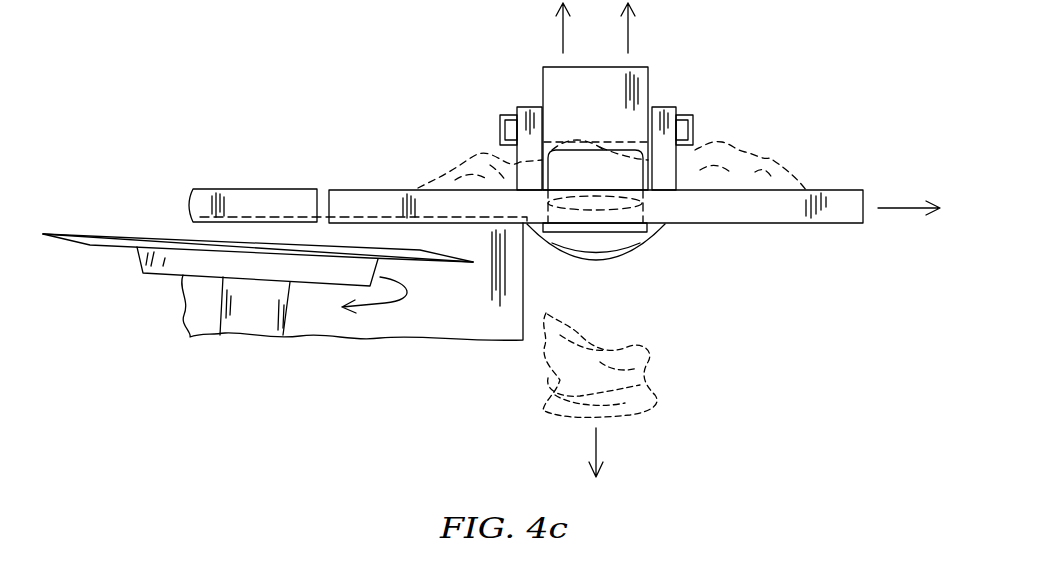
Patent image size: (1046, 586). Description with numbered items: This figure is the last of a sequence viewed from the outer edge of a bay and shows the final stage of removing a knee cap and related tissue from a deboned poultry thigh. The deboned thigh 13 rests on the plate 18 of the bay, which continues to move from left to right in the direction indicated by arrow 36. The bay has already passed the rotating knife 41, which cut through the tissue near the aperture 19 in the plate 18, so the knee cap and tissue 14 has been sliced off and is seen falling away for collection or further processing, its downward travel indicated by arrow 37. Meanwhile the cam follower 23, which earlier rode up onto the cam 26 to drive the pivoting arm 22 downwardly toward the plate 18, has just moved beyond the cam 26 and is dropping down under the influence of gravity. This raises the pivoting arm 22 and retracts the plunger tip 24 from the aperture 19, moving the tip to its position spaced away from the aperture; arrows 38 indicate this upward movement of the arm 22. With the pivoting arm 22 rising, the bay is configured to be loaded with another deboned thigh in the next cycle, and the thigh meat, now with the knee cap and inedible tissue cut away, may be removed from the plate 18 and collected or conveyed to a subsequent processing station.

The deboned thigh 13 is at (748, 158).
The knee cap and related tissue 14 is at (663, 435).
The plate 18 is at (836, 190).
The aperture 19 is at (647, 206).
The pivoting arm 22 is at (543, 77).
The cam follower 23 is at (606, 260).
The plunger tip 24 is at (590, 172).
The cam 26 is at (361, 218).
The direction of bay movement 36 is at (903, 207).
The material discharge direction 37 is at (592, 443).
The housing lift direction 38 is at (660, 31).
The rotating knife 41 is at (156, 296).